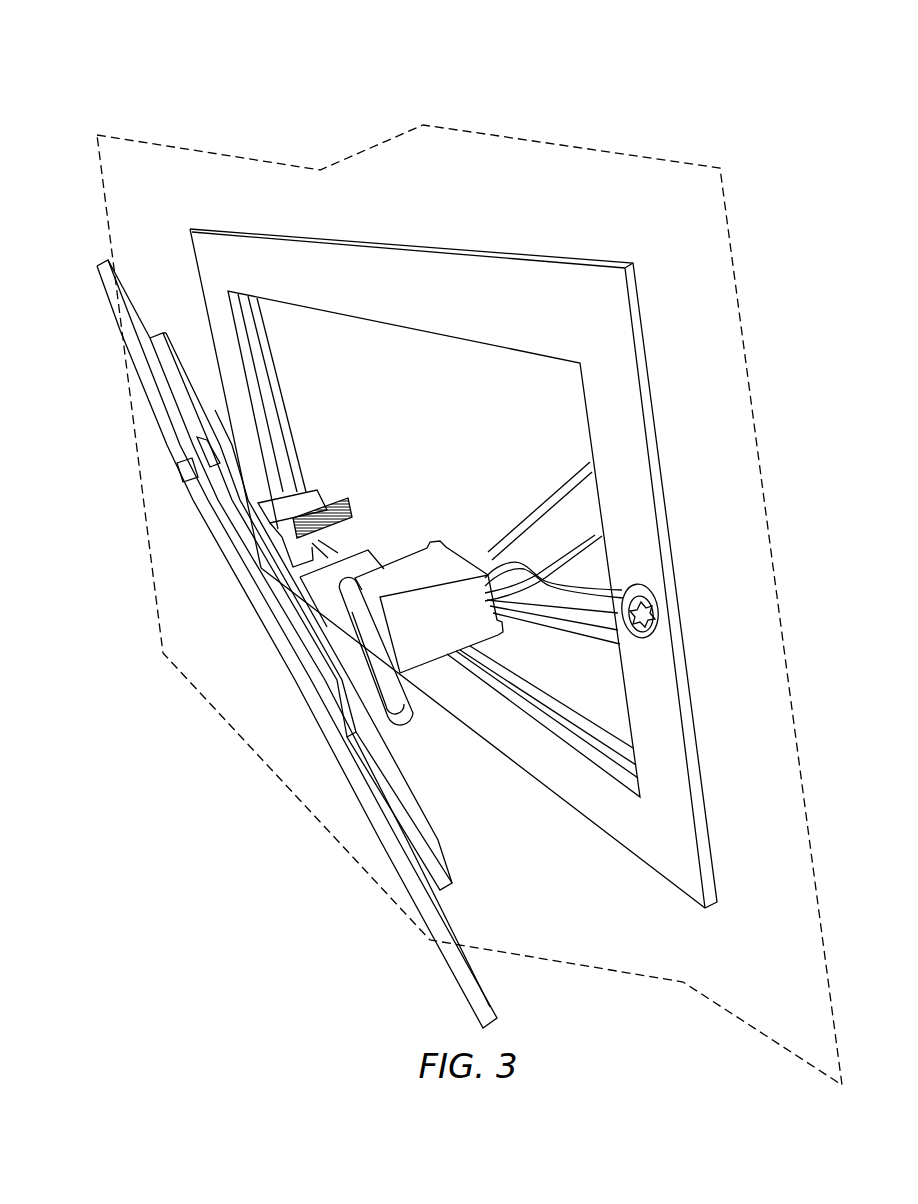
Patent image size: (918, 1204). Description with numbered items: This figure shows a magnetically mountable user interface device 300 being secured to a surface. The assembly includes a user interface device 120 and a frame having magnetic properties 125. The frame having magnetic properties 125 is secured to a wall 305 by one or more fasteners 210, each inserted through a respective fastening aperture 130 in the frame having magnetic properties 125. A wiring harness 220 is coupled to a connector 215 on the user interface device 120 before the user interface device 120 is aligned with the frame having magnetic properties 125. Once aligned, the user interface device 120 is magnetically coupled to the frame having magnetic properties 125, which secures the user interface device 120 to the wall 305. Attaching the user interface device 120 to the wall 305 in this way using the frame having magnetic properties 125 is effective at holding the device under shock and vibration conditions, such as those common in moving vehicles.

The magnetically mountable user interface device 300 is at (676, 113).
The wall 305 is at (732, 247).
The frame having magnetic properties 125 is at (543, 257).
The user interface device 120 is at (94, 305).
The wiring harness 220 is at (459, 547).
The connector 215 is at (423, 669).
The fastening apertures 130 is at (633, 585).
The fasteners 210 is at (655, 623).